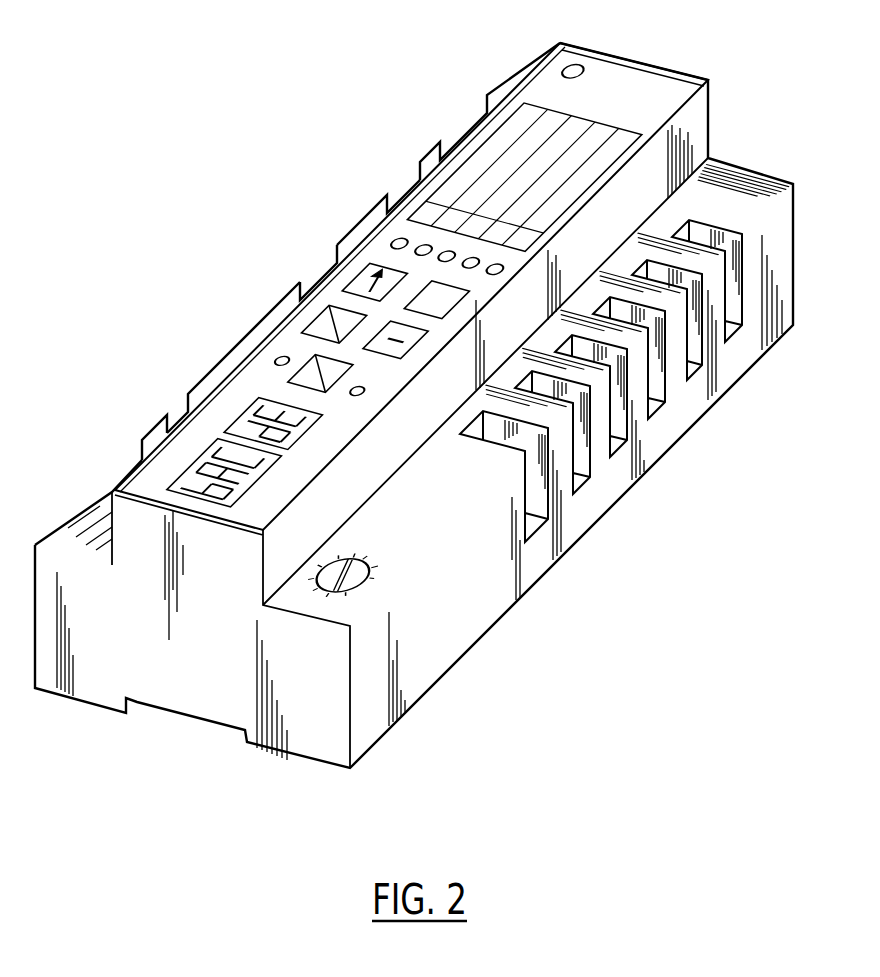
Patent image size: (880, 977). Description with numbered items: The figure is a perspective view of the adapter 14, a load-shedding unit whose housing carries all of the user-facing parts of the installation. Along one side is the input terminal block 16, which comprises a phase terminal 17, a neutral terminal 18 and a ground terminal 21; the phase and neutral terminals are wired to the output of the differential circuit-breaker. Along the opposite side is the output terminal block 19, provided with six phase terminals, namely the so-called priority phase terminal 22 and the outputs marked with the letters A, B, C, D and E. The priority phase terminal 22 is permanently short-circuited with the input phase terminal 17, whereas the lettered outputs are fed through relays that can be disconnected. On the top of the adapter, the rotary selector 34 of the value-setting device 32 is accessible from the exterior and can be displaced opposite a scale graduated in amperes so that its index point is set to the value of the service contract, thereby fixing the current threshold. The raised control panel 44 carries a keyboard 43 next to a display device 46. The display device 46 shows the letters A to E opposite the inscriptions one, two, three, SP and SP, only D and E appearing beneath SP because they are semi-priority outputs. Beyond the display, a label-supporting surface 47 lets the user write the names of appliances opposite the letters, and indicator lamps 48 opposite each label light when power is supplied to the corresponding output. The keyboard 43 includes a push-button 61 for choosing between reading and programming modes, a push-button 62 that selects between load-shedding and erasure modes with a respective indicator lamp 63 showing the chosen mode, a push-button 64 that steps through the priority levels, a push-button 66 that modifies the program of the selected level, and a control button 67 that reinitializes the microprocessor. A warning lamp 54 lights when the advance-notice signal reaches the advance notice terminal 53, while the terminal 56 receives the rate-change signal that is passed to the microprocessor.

The adapter 14 is at (193, 745).
The input terminal block 16 is at (162, 378).
The phase terminal 17 is at (182, 407).
The neutral terminal 18 is at (133, 452).
The output terminal block 19 is at (551, 634).
The ground terminal 21 is at (314, 265).
The priority phase terminal 22 is at (540, 500).
The value-setting device 32 is at (389, 546).
The rotary selector 34 is at (329, 572).
The keyboard 43 is at (300, 291).
The control panel 44 is at (578, 52).
The display device 46 is at (275, 483).
The label-supporting surface 47 is at (485, 147).
The indicator lamps 48 is at (402, 232).
The advance notice terminal 53 is at (371, 200).
The warning lamp 54 is at (588, 71).
The terminal 56 is at (429, 152).
The push-button 61 is at (322, 312).
The push-button 62 is at (315, 386).
The indicator lamp 63 is at (278, 356).
The push-button 64 is at (355, 277).
The push-button 66 is at (409, 352).
The control button 67 is at (462, 301).